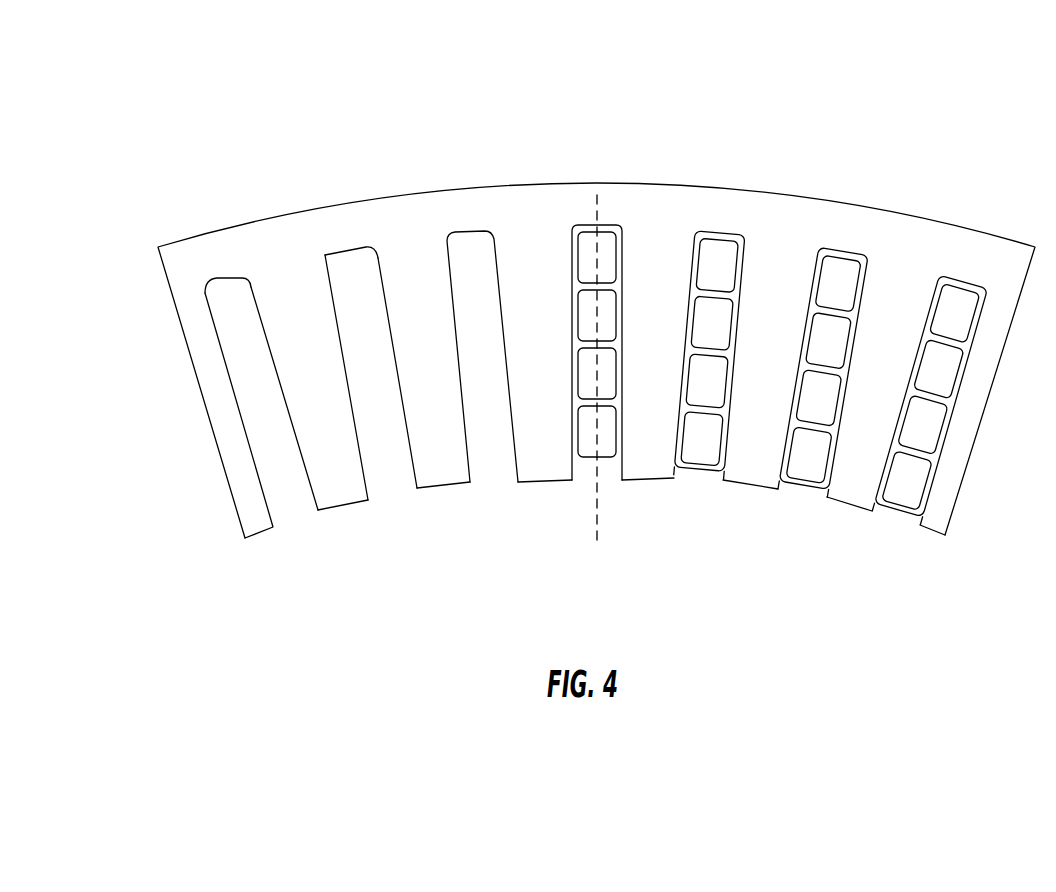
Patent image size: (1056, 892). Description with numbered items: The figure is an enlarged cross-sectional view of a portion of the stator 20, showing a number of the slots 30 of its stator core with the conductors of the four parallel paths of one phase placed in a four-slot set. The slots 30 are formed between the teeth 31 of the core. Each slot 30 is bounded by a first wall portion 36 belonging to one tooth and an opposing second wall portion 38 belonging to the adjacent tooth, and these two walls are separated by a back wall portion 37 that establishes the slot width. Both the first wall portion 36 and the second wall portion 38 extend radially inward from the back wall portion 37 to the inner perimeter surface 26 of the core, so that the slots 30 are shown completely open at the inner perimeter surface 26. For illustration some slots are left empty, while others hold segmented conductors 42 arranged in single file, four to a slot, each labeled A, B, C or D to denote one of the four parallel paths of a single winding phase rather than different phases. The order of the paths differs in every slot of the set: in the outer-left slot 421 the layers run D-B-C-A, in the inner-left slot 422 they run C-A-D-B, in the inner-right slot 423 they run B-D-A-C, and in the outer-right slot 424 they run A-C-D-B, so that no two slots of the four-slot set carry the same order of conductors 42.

The stator 20 is at (914, 160).
The inner perimeter surface 26 is at (347, 507).
The slots 30 is at (333, 262).
The teeth 31 is at (433, 437).
The first wall portion 36 is at (238, 408).
The back wall portion 37 is at (223, 283).
The second wall portion 38 is at (242, 277).
The segmented conductors 42 is at (786, 353).
The outer-left slot 421 is at (585, 225).
The inner-left slot 422 is at (718, 232).
The inner-right slot 423 is at (842, 250).
The outer-right slot 424 is at (936, 336).